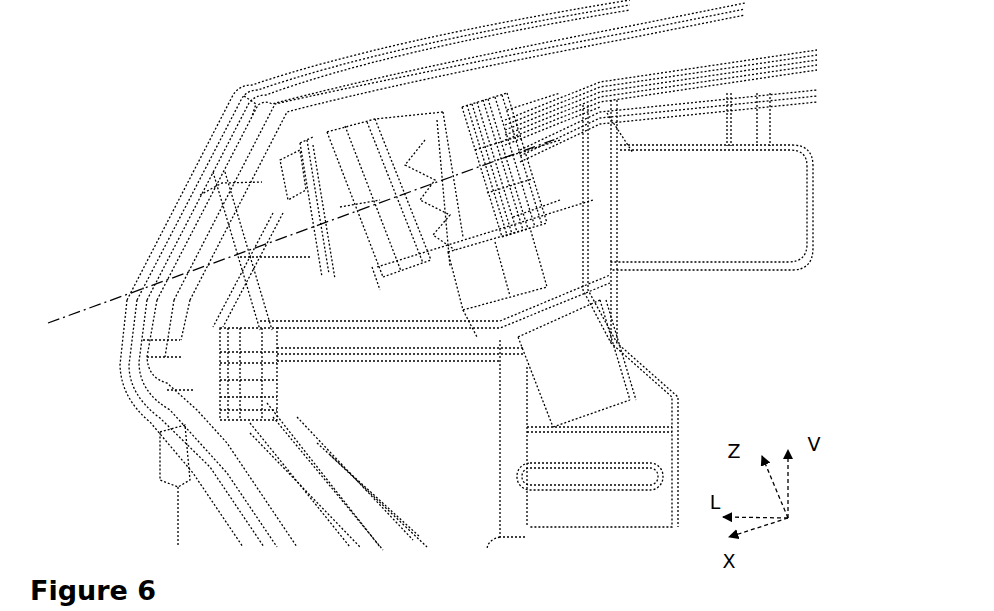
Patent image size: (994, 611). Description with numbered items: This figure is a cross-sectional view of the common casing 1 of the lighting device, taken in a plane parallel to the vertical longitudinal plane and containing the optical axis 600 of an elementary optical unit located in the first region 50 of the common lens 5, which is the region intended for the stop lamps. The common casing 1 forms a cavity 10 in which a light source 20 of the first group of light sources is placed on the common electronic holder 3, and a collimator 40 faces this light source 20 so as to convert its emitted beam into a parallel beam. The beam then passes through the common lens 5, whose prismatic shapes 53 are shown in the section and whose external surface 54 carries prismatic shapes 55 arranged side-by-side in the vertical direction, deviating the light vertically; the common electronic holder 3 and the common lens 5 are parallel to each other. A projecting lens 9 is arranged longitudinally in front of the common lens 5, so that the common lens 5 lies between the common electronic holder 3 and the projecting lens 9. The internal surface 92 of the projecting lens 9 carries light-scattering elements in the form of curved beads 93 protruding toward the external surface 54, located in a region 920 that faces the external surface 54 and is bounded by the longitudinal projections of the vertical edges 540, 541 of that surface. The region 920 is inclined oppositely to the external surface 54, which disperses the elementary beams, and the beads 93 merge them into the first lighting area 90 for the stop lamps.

The common casing 1 is at (644, 70).
The common electronic holder 3 is at (498, 188).
The common lens 5 is at (293, 210).
The first region of the common lens 50 is at (451, 180).
The projecting lens 9 is at (245, 102).
The cavity 10 is at (524, 124).
The light source of the first group 20 is at (472, 164).
The first collimator 40 is at (395, 157).
The prismatic shapes 53 is at (310, 204).
The external surface of the common lens 54 is at (297, 275).
The prismatic shapes 55 is at (300, 268).
The vertical edge of the external surface 540 is at (285, 170).
The lower edge of the external surface 541 is at (335, 278).
The first lighting area 90 is at (177, 179).
The internal surface of the projecting lens 92 is at (175, 323).
The beads 93 is at (214, 240).
The region of the internal surface 920 is at (207, 190).
The optical axis 600 is at (294, 231).